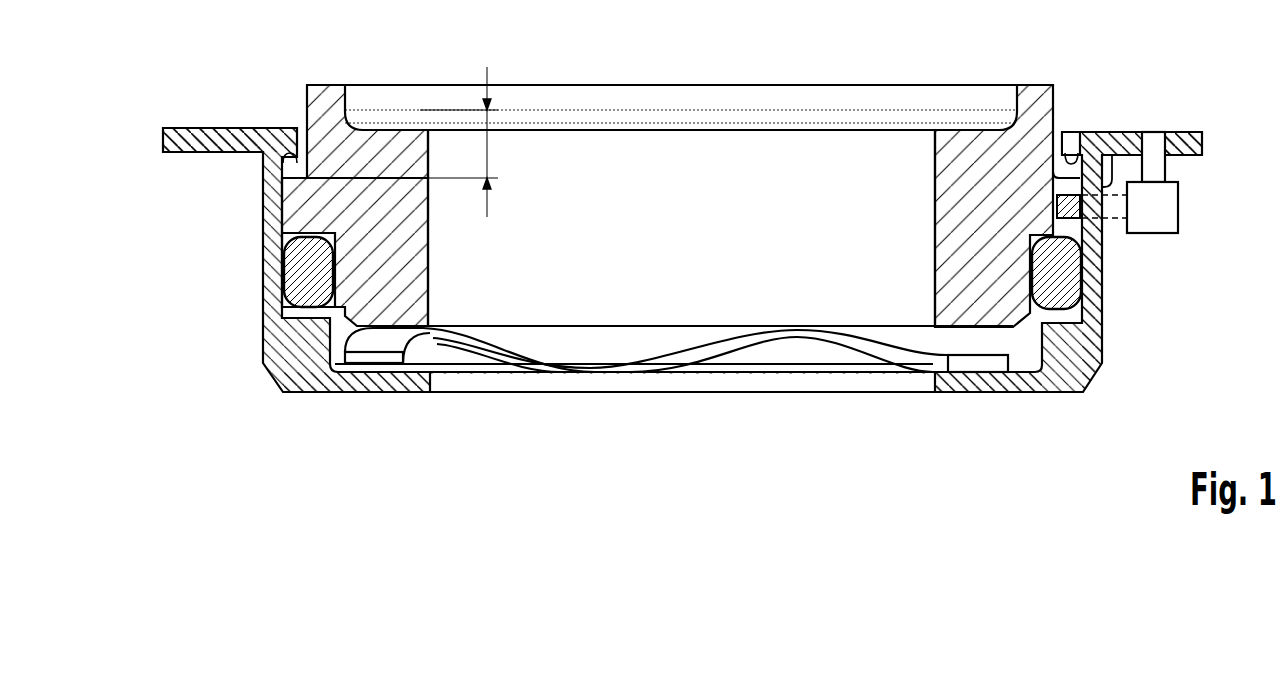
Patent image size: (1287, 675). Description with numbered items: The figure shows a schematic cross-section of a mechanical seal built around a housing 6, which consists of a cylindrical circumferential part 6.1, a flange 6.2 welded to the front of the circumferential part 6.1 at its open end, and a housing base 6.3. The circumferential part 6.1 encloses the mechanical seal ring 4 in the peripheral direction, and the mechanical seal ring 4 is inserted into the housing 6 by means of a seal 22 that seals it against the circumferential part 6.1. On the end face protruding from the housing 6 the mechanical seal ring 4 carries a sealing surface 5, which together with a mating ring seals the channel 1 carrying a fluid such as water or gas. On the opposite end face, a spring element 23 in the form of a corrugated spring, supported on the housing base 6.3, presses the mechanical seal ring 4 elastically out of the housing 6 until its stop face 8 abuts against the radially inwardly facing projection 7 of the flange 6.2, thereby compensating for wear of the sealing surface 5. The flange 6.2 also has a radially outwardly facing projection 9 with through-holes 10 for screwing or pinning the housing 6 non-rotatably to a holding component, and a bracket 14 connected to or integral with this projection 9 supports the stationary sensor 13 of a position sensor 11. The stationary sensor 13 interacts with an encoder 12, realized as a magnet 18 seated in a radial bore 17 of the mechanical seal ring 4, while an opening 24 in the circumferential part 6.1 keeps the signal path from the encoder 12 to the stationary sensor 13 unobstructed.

The channel 1 is at (690, 211).
The mechanical seal ring 4 is at (1003, 375).
The sealing surface 5 is at (1033, 88).
The housing 6 is at (1090, 370).
The circumferential part 6.1 is at (1097, 300).
The flange 6.2 is at (1125, 143).
The housing base 6.3 is at (957, 388).
The radially inwardly facing projection 7 is at (283, 160).
The stop face 8 is at (297, 158).
The radially outwardly facing projection 9 is at (174, 137).
The through-holes 10 is at (212, 138).
The position sensor 11 is at (1193, 216).
The encoder 12 is at (1058, 207).
The stationary sensor 13 is at (1180, 210).
The bracket 14 is at (1165, 165).
The radial bore 17 is at (1048, 230).
The magnet 18 is at (987, 194).
The seal 22 is at (1075, 262).
The spring element 23 is at (750, 352).
The opening 24 is at (1108, 158).